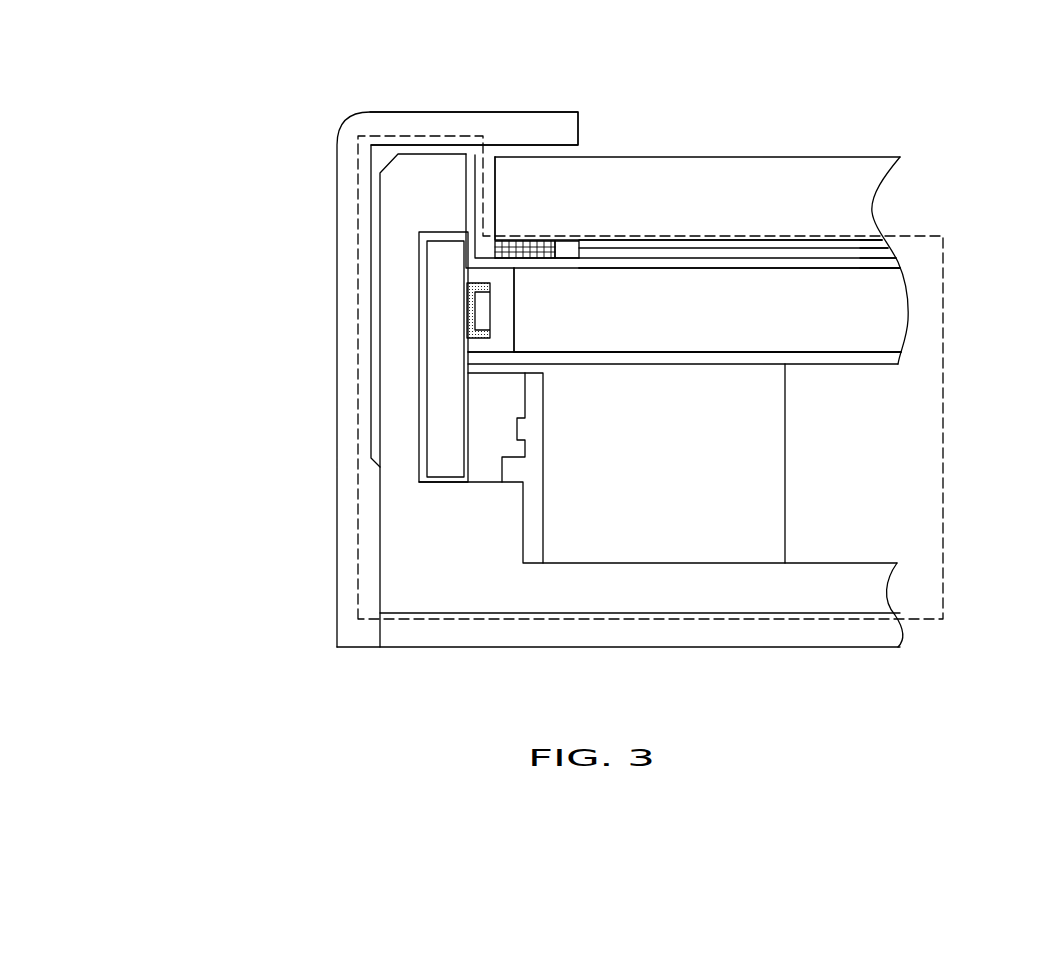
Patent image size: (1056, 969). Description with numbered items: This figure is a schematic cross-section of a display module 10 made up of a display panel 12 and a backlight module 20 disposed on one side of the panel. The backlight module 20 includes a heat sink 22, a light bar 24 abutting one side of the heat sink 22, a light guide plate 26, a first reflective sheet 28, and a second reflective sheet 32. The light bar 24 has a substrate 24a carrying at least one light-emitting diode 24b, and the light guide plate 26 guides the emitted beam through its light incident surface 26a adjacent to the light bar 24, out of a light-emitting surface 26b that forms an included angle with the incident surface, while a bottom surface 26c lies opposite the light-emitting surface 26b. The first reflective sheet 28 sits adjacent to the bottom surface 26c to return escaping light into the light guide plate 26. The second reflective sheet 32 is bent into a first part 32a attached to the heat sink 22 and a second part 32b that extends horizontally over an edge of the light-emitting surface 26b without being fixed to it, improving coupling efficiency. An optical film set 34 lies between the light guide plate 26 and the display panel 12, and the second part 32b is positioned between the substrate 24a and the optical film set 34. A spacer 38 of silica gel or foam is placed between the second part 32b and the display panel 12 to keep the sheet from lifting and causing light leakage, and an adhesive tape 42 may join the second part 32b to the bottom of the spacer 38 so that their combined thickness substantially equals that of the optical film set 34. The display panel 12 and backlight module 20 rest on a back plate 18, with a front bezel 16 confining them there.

The display module 10 is at (160, 76).
The display panel 12 is at (703, 173).
The front bezel 16 is at (500, 124).
The back plate 18 is at (603, 635).
The backlight module 20 is at (910, 234).
The heat sink 22 is at (397, 440).
The light bar 24 is at (350, 357).
The substrate 24a is at (452, 349).
The light-emitting diode 24b is at (480, 312).
The light guide plate 26 is at (731, 323).
The light incident surface 26a is at (514, 303).
The light-emitting surface 26b is at (690, 270).
The bottom surface 26c is at (642, 351).
The first reflective sheet 28 is at (888, 358).
The second reflective sheet 32 is at (557, 207).
The first part 32a is at (490, 192).
The second part 32b is at (512, 243).
The optical film set 34 is at (901, 238).
The spacer 38 is at (537, 260).
The adhesive tape 42 is at (492, 192).